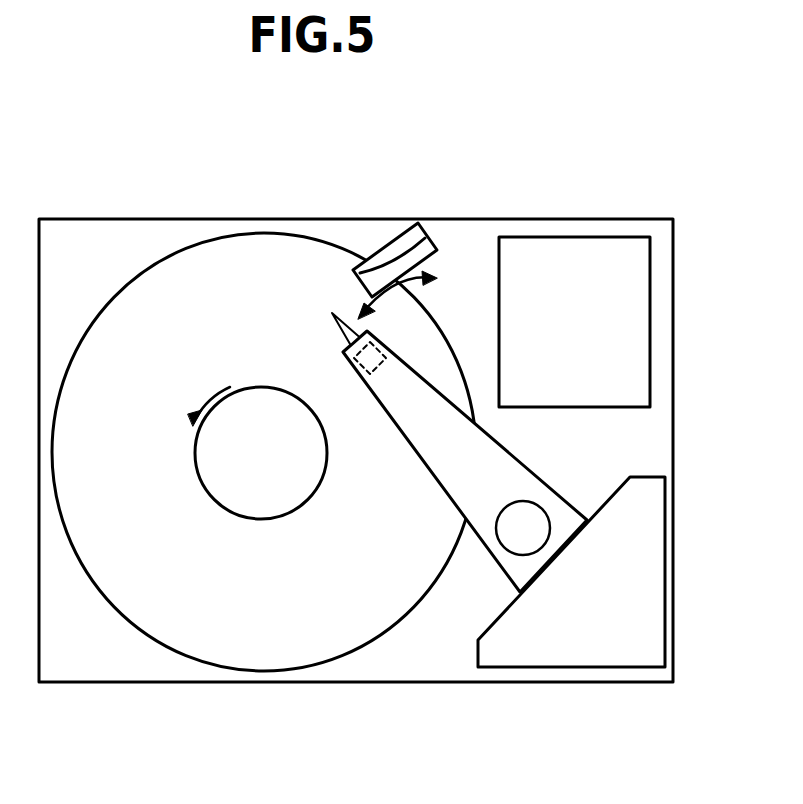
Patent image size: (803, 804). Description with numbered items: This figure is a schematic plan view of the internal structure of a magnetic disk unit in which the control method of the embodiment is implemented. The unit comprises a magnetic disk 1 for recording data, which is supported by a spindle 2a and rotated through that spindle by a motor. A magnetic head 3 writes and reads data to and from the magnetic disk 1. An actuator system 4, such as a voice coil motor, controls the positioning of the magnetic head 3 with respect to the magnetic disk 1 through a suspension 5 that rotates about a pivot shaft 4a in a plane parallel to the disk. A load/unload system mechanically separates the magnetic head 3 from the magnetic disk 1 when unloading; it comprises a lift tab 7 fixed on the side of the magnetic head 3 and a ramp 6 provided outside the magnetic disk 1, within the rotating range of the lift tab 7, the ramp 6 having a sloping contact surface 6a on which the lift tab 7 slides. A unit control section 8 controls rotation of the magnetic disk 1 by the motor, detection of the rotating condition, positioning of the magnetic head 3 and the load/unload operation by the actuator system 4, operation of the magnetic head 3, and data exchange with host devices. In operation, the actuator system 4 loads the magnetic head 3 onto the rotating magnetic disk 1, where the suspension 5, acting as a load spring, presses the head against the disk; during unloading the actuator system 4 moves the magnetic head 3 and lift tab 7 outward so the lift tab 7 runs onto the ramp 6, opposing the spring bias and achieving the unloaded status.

The magnetic disk 1 is at (182, 285).
The spindle 2a is at (258, 503).
The magnetic head 3 is at (375, 358).
The actuator system 4 is at (648, 602).
The pivot shaft 4a is at (527, 529).
The suspension 5 is at (488, 462).
The ramp 6 is at (407, 235).
The sloping contact surface 6a is at (425, 248).
The lift tab 7 is at (345, 323).
The unit control section 8 is at (625, 307).